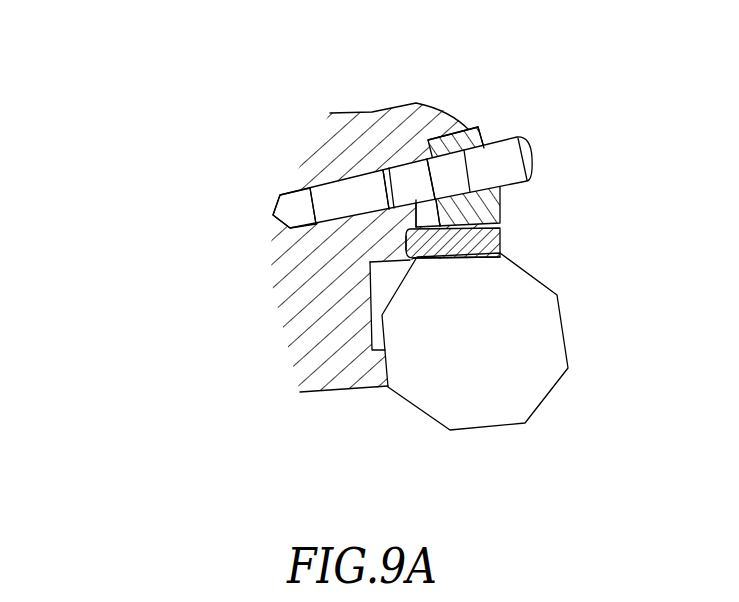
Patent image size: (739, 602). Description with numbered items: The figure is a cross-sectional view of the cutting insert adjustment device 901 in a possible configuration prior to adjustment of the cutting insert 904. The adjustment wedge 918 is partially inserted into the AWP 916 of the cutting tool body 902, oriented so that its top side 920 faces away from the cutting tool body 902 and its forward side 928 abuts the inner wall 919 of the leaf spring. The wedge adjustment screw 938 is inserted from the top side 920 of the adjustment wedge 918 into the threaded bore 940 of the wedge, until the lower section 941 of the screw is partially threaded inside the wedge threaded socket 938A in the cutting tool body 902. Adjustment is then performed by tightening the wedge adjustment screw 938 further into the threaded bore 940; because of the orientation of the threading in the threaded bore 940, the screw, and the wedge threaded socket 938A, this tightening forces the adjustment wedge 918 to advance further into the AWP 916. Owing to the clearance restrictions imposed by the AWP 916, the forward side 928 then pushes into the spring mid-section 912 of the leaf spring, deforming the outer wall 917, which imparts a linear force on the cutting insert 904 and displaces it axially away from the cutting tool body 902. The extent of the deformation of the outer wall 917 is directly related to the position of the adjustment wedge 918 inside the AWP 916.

The cutting insert adjustment device 901 is at (163, 57).
The cutting tool body 902 is at (328, 338).
The cutting insert 904 is at (527, 380).
The spring mid-section 912 is at (500, 232).
The AWP 916 is at (417, 210).
The outer wall 917 is at (467, 258).
The adjustment wedge 918 is at (486, 131).
The inner wall 919 is at (440, 233).
The top side 920 is at (500, 202).
The forward side 928 is at (453, 217).
The wedge adjustment screw 938 is at (538, 151).
The wedge threaded socket 938A is at (343, 202).
The threaded bore 940 is at (472, 143).
The lower section 941 is at (420, 167).